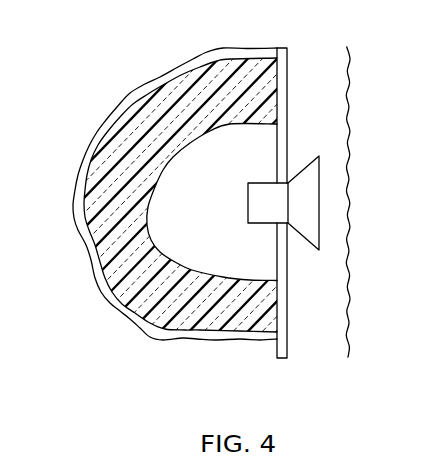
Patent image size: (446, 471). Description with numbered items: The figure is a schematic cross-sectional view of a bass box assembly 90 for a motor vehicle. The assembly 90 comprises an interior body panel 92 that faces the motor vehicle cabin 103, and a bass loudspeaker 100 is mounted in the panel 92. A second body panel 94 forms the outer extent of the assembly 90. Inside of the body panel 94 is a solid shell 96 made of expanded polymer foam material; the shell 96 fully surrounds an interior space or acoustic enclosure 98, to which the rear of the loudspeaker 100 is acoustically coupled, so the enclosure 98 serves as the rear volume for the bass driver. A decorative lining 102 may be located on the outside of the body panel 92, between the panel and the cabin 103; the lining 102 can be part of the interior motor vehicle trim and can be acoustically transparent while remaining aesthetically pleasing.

The bass box assembly 90 is at (118, 62).
The interior body panel 92 is at (288, 302).
The second body panel 94 is at (197, 339).
The solid shell 96 is at (97, 283).
The acoustic enclosure 98 is at (152, 209).
The bass loudspeaker 100 is at (313, 210).
The decorative lining 102 is at (350, 153).
The motor vehicle cabin 103 is at (416, 298).